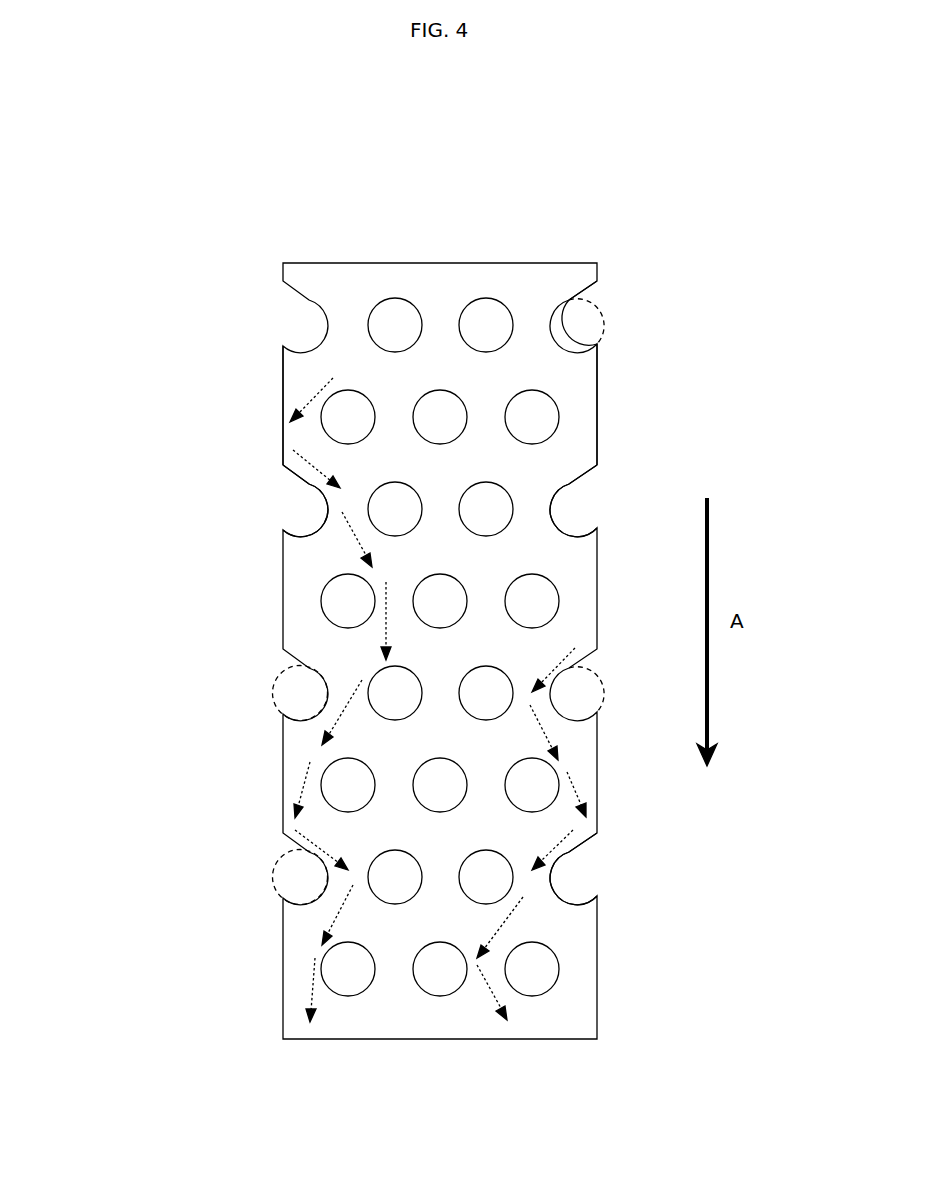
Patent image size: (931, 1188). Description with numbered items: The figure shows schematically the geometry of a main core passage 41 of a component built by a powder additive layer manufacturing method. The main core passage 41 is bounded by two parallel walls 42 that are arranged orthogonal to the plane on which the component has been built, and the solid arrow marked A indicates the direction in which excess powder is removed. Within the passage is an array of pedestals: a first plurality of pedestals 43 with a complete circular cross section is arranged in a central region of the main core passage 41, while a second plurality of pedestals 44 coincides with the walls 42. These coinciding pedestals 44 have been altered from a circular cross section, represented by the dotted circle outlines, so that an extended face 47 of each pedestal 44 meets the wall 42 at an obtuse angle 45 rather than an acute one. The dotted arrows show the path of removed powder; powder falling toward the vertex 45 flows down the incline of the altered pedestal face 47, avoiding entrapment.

The main core passage 41 is at (350, 323).
The walls 42 is at (283, 385).
The first plurality of pedestals 43 is at (385, 310).
The second plurality of pedestals 44 is at (292, 500).
The obtuse angle 45 is at (281, 651).
The pedestal face 47 is at (557, 303).